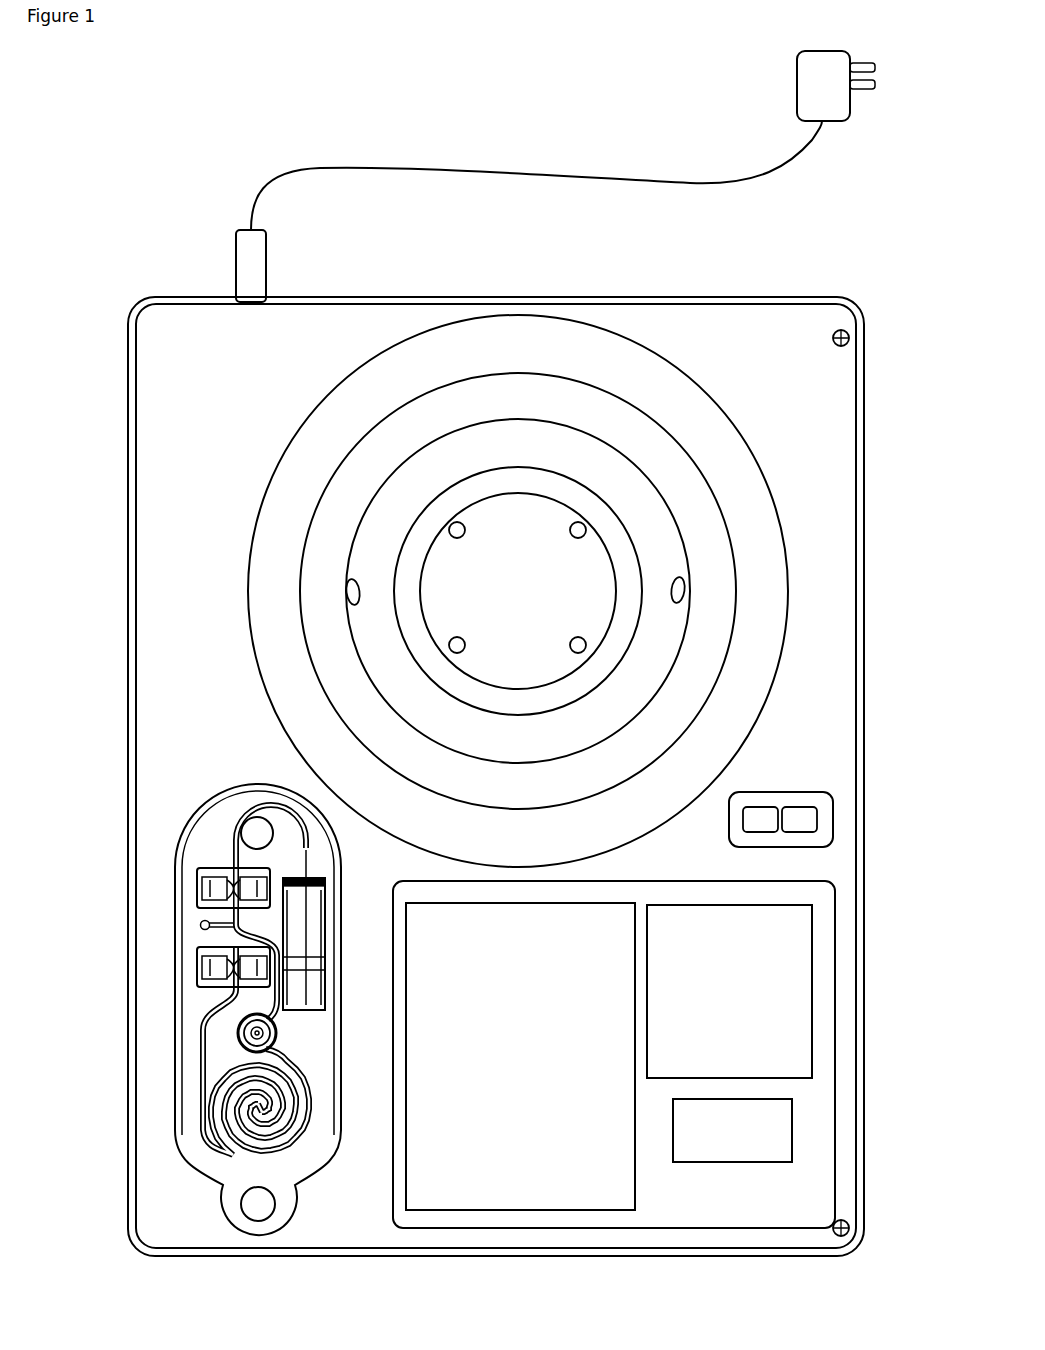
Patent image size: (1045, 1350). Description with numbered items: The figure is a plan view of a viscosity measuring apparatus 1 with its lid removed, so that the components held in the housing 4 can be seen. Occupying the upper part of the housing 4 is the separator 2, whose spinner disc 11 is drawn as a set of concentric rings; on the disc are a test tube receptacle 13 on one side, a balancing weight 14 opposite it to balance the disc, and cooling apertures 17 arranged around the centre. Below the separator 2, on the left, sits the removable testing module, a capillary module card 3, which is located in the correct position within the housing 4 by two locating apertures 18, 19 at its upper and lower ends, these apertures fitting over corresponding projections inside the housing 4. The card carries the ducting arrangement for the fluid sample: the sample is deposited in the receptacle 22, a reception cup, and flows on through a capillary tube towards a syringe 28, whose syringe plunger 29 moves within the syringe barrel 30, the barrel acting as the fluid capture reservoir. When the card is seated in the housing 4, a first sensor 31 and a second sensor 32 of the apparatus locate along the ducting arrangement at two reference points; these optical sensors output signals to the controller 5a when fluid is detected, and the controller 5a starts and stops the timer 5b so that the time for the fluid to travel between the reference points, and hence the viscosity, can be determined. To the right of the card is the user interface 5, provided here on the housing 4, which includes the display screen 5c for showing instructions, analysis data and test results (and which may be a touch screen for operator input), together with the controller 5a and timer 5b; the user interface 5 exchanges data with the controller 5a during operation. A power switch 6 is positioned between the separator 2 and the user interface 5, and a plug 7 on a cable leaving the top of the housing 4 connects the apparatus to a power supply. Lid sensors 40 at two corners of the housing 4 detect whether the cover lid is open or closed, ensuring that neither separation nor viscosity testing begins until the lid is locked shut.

The viscosity measuring apparatus 1 is at (163, 262).
The separator 2 is at (448, 358).
The capillary module card 3 is at (190, 817).
The housing 4 is at (132, 357).
The user interface 5 is at (671, 1052).
The controller 5a is at (811, 1028).
The timer 5b is at (791, 1138).
The display screen 5c is at (636, 1196).
The power switch 6 is at (797, 813).
The plug 7 is at (830, 50).
The spinner disc 11 is at (530, 395).
The test tube receptacle 13 is at (681, 588).
The balancing weight 14 is at (350, 584).
The cooling apertures 17 is at (580, 528).
The locating aperture 18 is at (252, 827).
The locating aperture 19 is at (258, 1215).
The receptacle 22 is at (253, 1032).
The syringe 28 is at (297, 878).
The syringe plunger 29 is at (283, 975).
The syringe barrel 30 is at (200, 922).
The first sensor 31 is at (200, 885).
The second sensor 32 is at (207, 973).
The lid sensors 40 is at (848, 333).